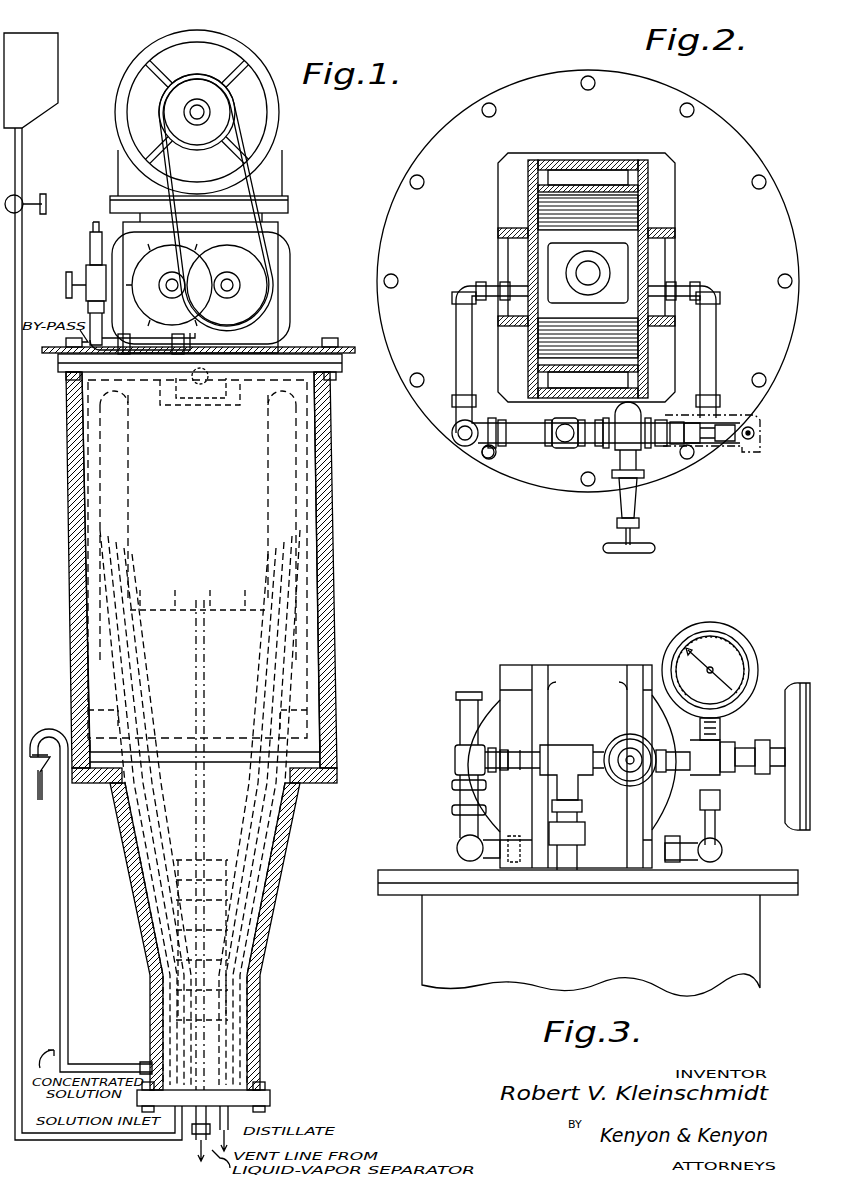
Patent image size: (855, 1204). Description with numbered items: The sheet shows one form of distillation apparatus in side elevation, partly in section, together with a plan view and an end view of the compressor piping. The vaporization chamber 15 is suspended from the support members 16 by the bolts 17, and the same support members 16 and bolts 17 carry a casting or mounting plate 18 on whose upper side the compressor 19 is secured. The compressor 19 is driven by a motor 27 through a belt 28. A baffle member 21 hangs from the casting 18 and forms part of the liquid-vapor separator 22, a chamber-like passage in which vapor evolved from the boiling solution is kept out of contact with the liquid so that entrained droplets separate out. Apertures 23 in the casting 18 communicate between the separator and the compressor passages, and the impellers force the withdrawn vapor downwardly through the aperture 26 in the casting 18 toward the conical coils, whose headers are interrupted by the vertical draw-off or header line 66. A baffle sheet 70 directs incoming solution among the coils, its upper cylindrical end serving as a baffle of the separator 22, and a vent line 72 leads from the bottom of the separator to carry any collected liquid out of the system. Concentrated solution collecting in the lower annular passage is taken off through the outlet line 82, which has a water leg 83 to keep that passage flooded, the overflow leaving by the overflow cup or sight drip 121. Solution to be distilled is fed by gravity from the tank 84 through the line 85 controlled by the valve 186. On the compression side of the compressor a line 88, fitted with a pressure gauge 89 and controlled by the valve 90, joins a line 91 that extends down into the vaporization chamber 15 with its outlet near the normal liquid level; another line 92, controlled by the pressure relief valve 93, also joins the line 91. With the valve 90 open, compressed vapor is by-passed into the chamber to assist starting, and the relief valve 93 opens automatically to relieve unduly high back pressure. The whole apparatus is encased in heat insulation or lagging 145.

In FIG. 1, the vaporization chamber 15 is at (332, 424).
In FIG. 3, the vaporization chamber 15 is at (750, 940).
In FIG. 1, the support members 16 is at (348, 372).
In FIG. 1, the bolts 17 is at (330, 338).
In FIG. 2, the casting or mounting plate 18 is at (532, 82).
In FIG. 3, the casting or mounting plate 18 is at (405, 880).
In FIG. 1, the compressor 19 is at (290, 266).
In FIG. 1, the baffle member 21 is at (268, 438).
In FIG. 1, the liquid-vapor separator 22 is at (196, 508).
In FIG. 2, the apertures 23 is at (597, 172).
In FIG. 2, the aperture 26 is at (595, 258).
In FIG. 1, the motor 27 is at (172, 106).
In FIG. 1, the belt 28 is at (262, 178).
In FIG. 1, the vertical draw-off or header line 66 is at (262, 1112).
In FIG. 1, the baffle sheet 70 is at (278, 468).
In FIG. 1, the vent line 72 is at (204, 705).
In FIG. 1, the outlet line 82 is at (113, 1072).
In FIG. 1, the water leg 83 is at (68, 878).
In FIG. 1, the tank 84 is at (48, 48).
In FIG. 1, the line 85 is at (23, 252).
In FIG. 2, the line 88 is at (717, 346).
In FIG. 3, the line 88 is at (720, 828).
In FIG. 2, the pressure gauge 89 is at (735, 452).
In FIG. 3, the pressure gauge 89 is at (738, 632).
In FIG. 1, the valve 90 is at (86, 288).
In FIG. 2, the valve 90 is at (636, 500).
In FIG. 3, the valve 90 is at (622, 740).
In FIG. 1, the line 91 is at (62, 378).
In FIG. 2, the line 91 is at (560, 450).
In FIG. 3, the line 91 is at (580, 802).
In FIG. 2, the line 92 is at (456, 350).
In FIG. 3, the line 92 is at (458, 848).
In FIG. 2, the pressure relief valve 93 is at (465, 448).
In FIG. 3, the pressure relief valve 93 is at (462, 762).
In FIG. 1, the overflow cup or sight drip 121 is at (50, 774).
In FIG. 1, the heat insulation material or lagging 145 is at (327, 590).
In FIG. 1, the valve 186 is at (28, 199).